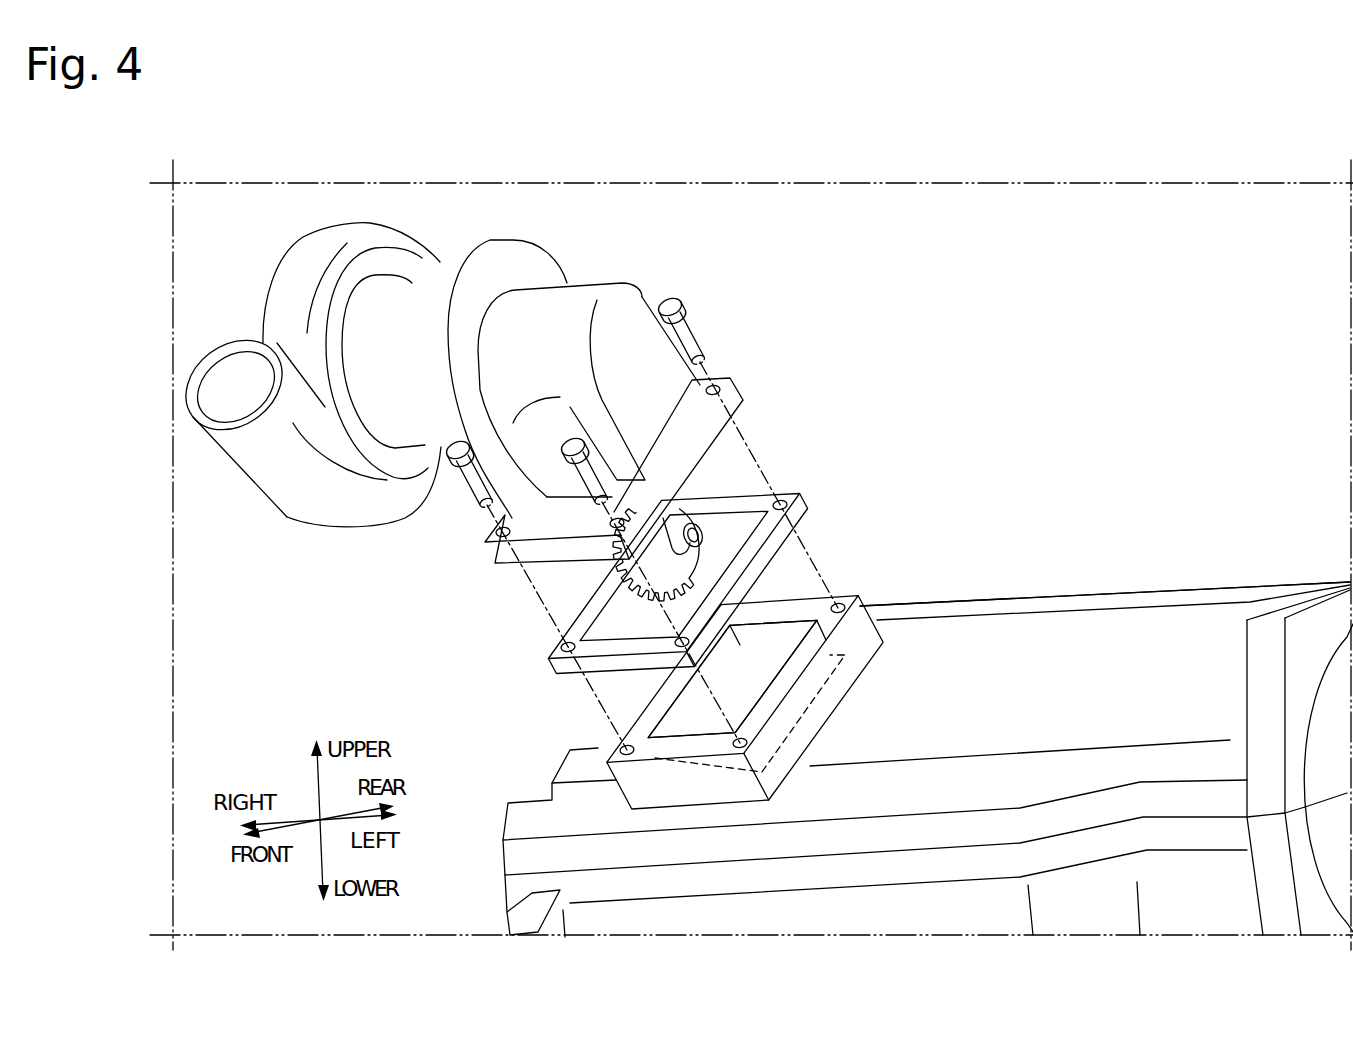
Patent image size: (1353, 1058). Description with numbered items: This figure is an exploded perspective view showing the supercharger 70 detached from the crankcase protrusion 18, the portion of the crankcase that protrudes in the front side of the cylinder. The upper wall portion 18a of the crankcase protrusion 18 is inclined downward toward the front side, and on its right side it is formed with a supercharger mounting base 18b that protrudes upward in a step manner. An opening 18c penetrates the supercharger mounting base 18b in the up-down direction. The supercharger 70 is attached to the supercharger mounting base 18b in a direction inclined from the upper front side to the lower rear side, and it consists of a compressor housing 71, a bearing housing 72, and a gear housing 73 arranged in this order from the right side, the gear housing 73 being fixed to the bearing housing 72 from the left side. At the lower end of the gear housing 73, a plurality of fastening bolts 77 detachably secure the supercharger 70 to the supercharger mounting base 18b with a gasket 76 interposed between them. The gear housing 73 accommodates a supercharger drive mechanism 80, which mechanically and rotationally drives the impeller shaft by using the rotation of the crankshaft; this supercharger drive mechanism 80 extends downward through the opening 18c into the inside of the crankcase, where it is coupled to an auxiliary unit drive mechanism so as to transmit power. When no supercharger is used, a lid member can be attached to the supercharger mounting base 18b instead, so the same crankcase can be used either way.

The crankcase protrusion 18 is at (1108, 640).
The upper wall portion 18a is at (1010, 683).
The supercharger mounting base 18b is at (805, 605).
The opening 18c is at (760, 672).
The supercharger 70 is at (503, 485).
The compressor housing 71 is at (303, 505).
The bearing housing 72 is at (388, 422).
The gear housing 73 is at (530, 258).
The gasket 76 is at (800, 494).
The fastening bolts 77 is at (692, 342).
The supercharger drive mechanism 80 is at (708, 483).